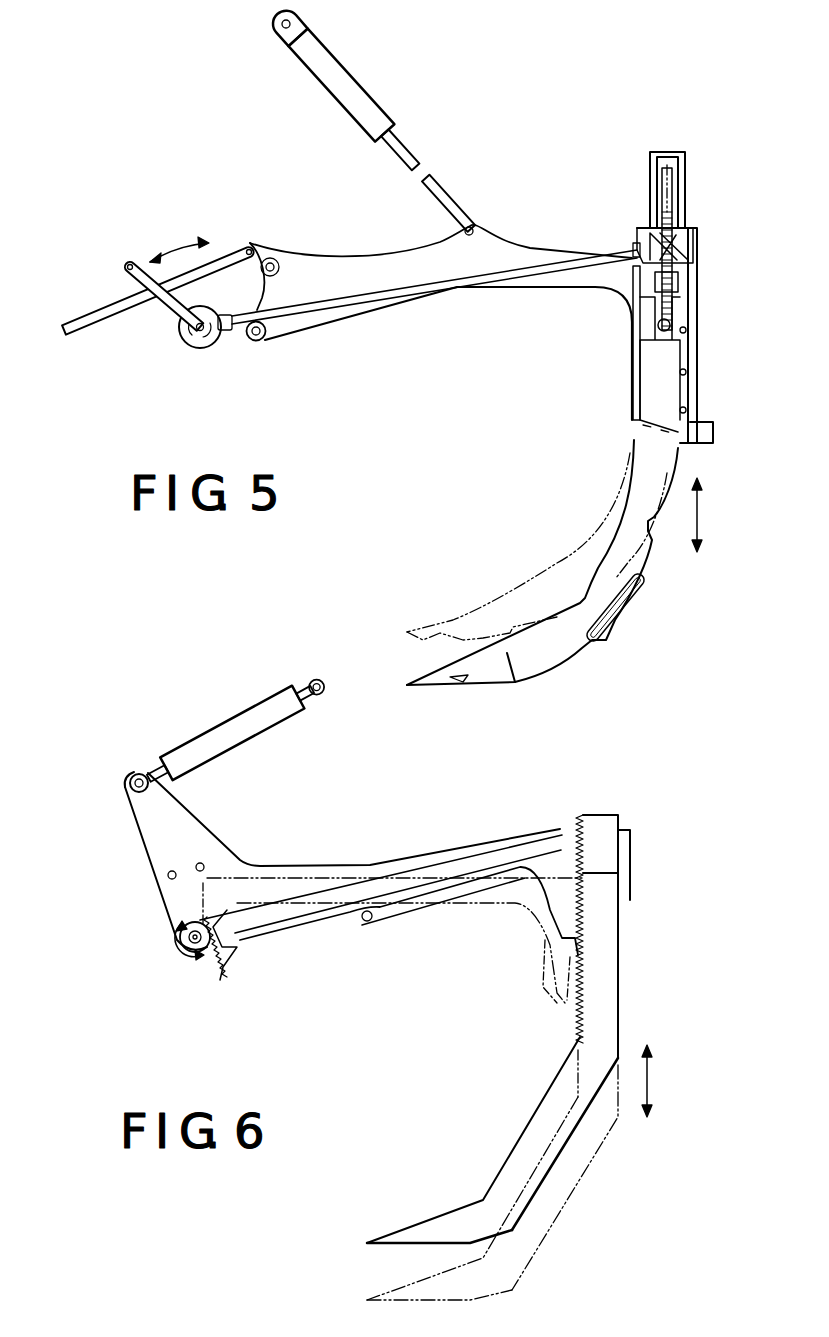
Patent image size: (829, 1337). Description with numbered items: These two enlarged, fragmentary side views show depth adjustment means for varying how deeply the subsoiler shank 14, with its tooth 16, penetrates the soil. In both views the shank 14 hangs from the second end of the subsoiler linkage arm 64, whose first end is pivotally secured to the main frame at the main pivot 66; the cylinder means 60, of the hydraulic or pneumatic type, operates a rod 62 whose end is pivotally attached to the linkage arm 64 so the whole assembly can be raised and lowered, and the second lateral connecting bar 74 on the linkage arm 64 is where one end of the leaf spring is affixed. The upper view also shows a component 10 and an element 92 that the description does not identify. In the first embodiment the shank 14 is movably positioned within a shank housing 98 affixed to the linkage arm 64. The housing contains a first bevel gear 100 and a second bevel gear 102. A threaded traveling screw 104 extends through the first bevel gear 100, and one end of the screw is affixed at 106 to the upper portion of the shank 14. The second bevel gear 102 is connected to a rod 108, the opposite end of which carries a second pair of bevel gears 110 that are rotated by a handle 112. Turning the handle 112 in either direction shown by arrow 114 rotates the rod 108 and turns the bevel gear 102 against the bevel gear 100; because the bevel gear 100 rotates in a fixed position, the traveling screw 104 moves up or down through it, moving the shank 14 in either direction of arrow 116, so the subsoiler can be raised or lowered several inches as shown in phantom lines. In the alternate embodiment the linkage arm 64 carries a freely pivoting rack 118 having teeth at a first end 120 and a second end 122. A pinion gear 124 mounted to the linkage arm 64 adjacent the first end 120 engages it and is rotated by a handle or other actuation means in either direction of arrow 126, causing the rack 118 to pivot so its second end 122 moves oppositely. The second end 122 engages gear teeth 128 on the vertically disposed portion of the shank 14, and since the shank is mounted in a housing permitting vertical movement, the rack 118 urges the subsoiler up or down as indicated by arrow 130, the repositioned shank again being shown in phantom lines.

In FIG. 5, the hydraulic cylinder 10 is at (340, 64).
In FIG. 5, the subsoiler shank 14 is at (652, 556).
In FIG. 6, the subsoiler shank 14 is at (543, 1096).
In FIG. 5, the tooth 16 is at (488, 683).
In FIG. 6, the tooth 16 is at (406, 1230).
In FIG. 6, the cylinder means 60 is at (226, 722).
In FIG. 5, the rod 62 is at (405, 146).
In FIG. 6, the rod 62 is at (147, 771).
In FIG. 5, the subsoiler linkage arm 64 is at (403, 275).
In FIG. 6, the subsoiler linkage arm 64 is at (273, 862).
In FIG. 5, the main pivot 66 is at (265, 341).
In FIG. 5, the second lateral connecting bar 74 is at (273, 260).
In FIG. 5, the control arm 92 is at (110, 302).
In FIG. 5, the shank housing 98 is at (631, 400).
In FIG. 5, the first bevel gear 100 is at (672, 256).
In FIG. 5, the second bevel gear 102 is at (636, 238).
In FIG. 5, the traveling screw 104 is at (676, 279).
In FIG. 5, the affixing point 106 is at (671, 330).
In FIG. 5, the rod 108 is at (540, 264).
In FIG. 5, the second pair of bevel gears 110 is at (200, 350).
In FIG. 5, the handle 112 is at (174, 310).
In FIG. 5, the arrow 114 is at (182, 250).
In FIG. 5, the arrow 116 is at (699, 512).
In FIG. 6, the rack 118 is at (395, 866).
In FIG. 6, the rack first end 120 is at (205, 970).
In FIG. 6, the rack second end 122 is at (572, 840).
In FIG. 6, the pinion gear 124 is at (185, 926).
In FIG. 6, the arrow 126 is at (180, 947).
In FIG. 6, the gear teeth 128 is at (575, 1013).
In FIG. 6, the arrow 130 is at (649, 1080).